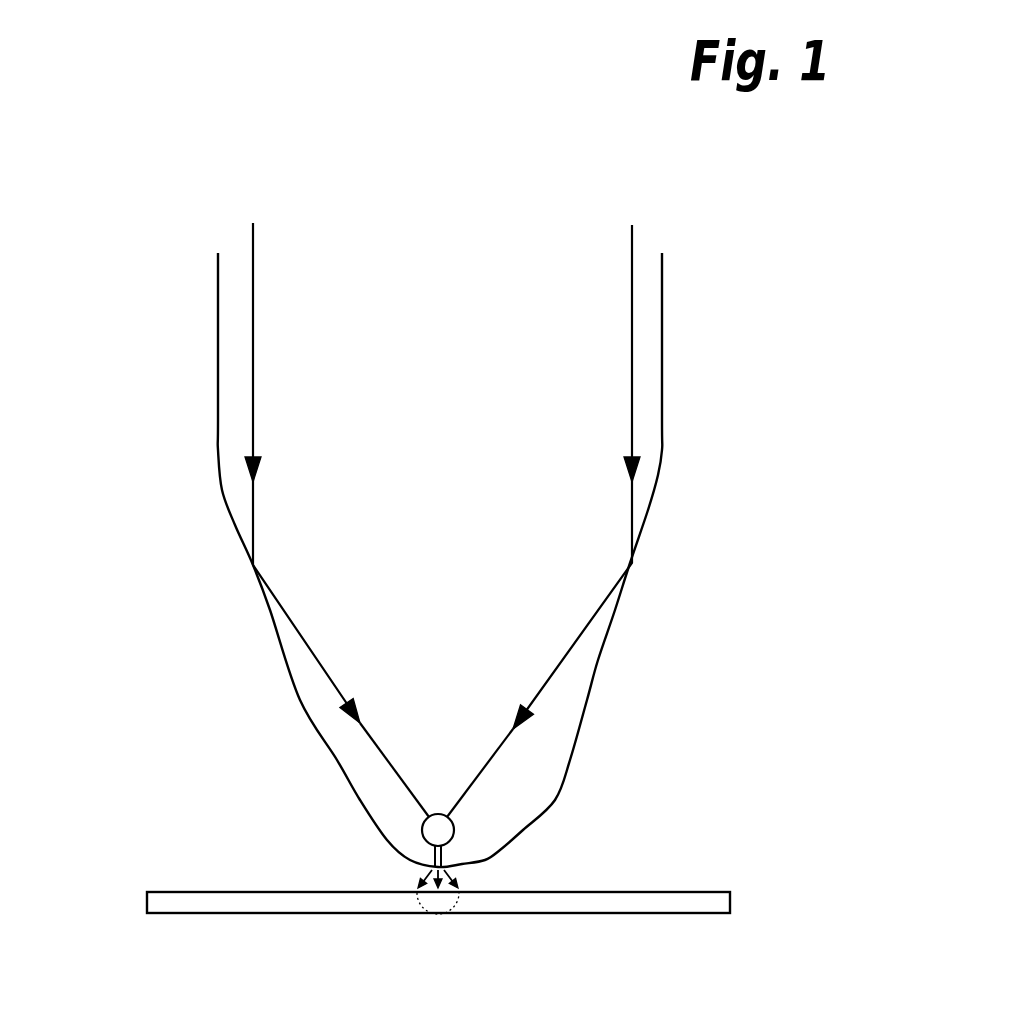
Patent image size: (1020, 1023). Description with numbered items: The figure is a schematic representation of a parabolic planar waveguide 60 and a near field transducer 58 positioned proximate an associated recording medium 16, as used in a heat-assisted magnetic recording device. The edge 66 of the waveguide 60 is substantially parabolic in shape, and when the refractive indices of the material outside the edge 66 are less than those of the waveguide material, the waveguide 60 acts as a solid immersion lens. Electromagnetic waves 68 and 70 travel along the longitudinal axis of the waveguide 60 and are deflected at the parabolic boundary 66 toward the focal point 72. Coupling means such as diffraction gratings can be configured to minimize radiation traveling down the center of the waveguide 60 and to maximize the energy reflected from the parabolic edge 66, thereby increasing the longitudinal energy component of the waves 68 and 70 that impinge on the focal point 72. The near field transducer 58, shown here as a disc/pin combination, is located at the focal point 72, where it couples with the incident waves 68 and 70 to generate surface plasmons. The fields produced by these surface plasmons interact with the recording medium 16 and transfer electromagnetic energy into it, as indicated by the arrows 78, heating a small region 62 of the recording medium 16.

The recording medium 16 is at (698, 878).
The near field transducer 58 is at (458, 844).
The waveguide 60 is at (150, 266).
The small region 62 is at (442, 903).
The edge 66 is at (608, 635).
The electromagnetic wave 68 is at (255, 502).
The electromagnetic wave 70 is at (632, 240).
The focal point 72 is at (470, 826).
The arrows 78 is at (428, 872).